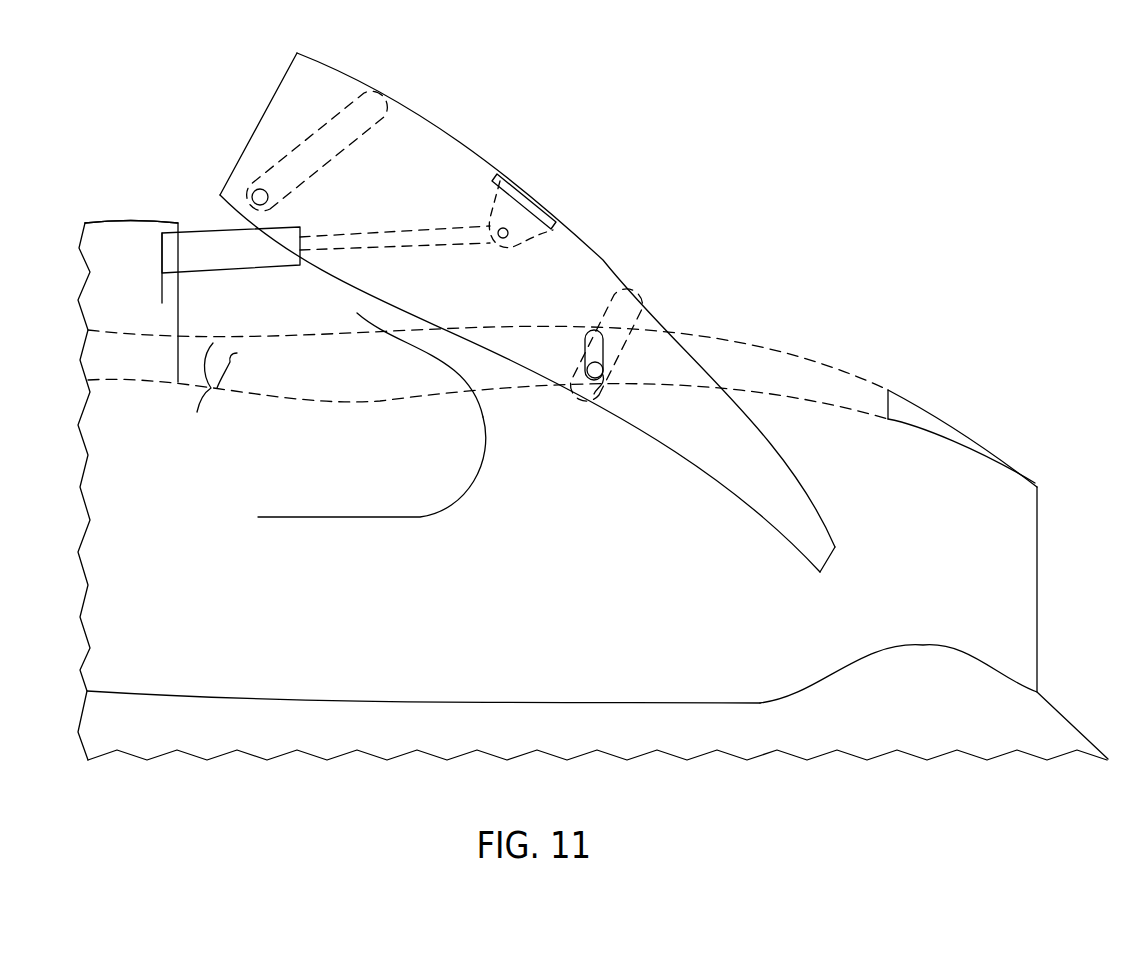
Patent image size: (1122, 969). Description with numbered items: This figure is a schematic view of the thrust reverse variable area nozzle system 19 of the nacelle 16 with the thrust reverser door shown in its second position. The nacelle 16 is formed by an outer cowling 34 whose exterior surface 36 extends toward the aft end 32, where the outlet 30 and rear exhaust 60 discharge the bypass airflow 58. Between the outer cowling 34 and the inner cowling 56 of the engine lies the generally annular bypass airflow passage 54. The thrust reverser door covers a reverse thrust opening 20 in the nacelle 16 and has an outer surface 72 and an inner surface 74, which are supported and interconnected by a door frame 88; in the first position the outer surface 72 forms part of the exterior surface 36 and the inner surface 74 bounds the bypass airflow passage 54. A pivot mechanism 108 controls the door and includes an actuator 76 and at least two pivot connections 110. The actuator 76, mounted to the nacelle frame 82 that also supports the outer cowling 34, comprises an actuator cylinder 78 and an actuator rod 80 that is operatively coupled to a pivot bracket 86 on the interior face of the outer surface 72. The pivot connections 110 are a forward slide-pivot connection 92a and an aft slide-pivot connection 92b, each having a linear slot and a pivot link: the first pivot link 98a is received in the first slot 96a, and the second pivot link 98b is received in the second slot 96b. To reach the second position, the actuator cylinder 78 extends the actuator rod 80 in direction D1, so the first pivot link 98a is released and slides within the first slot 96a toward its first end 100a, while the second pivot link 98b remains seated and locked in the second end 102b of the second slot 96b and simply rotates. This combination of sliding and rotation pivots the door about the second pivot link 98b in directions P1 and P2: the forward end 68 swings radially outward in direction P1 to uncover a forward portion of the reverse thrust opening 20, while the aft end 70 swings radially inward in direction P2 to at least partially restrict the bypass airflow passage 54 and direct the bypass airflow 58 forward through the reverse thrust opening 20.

The nacelle 16 is at (588, 382).
The thrust reverse variable area nozzle system 19 is at (504, 300).
The reverse thrust opening 20 is at (420, 391).
The outlet 30 is at (1040, 516).
The aft end of the nacelle 32 is at (938, 572).
The outer cowling 34 is at (99, 222).
The exterior surface 36 is at (147, 222).
The bypass airflow passage 54 is at (592, 491).
The inner cowling 56 is at (440, 701).
The bypass airflow 58 is at (372, 443).
The rear exhaust 60 is at (1040, 651).
The forward end of the thrust reverser door 68 is at (215, 201).
The aft end of the thrust reverser door 70 is at (805, 560).
The outer surface 72 is at (458, 141).
The inner surface 74 is at (656, 445).
The actuator 76 is at (313, 326).
The actuator cylinder 78 is at (222, 274).
The actuator rod 80 is at (420, 230).
The frame of the nacelle 82 is at (166, 155).
The pivot bracket 86 is at (537, 233).
The frame of the thrust reverser door 88 is at (364, 143).
The first slide-pivot connection 92a is at (273, 449).
The second slide-pivot connection 92b is at (531, 445).
The first slot 96a is at (196, 394).
The second slot 96b is at (585, 338).
The first pivot link 98a is at (270, 199).
The second pivot link 98b is at (606, 388).
The first end of the first slot 100a is at (233, 364).
The second end of the second slot 102b is at (595, 395).
The pivot mechanism 108 is at (500, 561).
The pivot connection 110 is at (610, 511).
The direction of actuator rod extension D1 is at (405, 275).
The pivot direction of the forward end P1 is at (193, 143).
The pivot direction of the aft end P2 is at (825, 613).